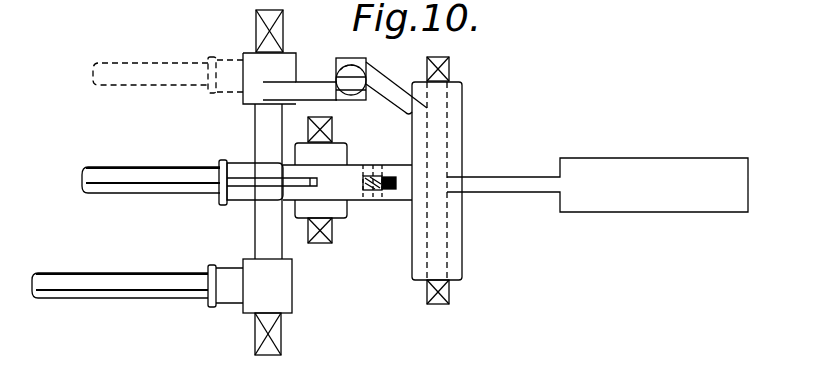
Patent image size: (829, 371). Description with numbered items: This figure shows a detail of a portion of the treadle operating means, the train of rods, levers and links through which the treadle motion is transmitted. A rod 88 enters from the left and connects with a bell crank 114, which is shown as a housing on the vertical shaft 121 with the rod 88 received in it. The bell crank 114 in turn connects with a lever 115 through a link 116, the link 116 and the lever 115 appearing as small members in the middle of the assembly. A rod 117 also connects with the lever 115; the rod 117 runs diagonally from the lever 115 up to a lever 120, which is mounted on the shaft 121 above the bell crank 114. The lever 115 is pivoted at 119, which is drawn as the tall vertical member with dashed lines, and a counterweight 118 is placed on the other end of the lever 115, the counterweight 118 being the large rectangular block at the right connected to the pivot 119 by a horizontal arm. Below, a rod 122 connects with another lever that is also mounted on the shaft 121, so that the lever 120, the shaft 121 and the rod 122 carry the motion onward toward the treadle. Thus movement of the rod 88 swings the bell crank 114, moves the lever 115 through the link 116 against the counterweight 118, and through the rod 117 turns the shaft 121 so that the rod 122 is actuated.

The rod 88 is at (172, 185).
The bell crank 114 is at (325, 172).
The lever 115 is at (397, 192).
The link 116 is at (368, 182).
The rod 117 is at (355, 88).
The counterweight 118 is at (633, 168).
The pivot 119 is at (449, 66).
The lever 120 is at (310, 92).
The shaft 121 is at (262, 235).
The rod 122 is at (150, 290).